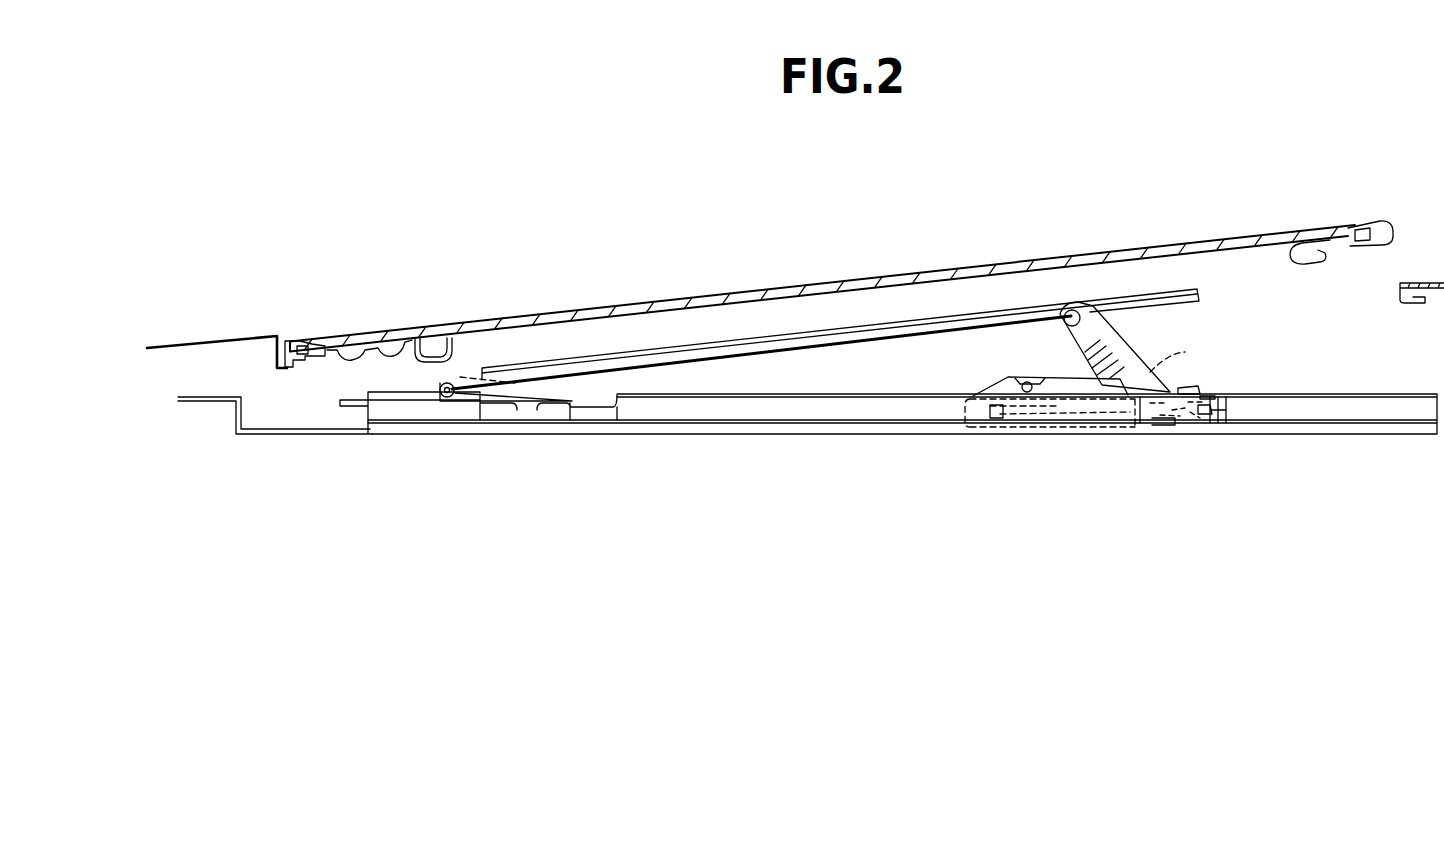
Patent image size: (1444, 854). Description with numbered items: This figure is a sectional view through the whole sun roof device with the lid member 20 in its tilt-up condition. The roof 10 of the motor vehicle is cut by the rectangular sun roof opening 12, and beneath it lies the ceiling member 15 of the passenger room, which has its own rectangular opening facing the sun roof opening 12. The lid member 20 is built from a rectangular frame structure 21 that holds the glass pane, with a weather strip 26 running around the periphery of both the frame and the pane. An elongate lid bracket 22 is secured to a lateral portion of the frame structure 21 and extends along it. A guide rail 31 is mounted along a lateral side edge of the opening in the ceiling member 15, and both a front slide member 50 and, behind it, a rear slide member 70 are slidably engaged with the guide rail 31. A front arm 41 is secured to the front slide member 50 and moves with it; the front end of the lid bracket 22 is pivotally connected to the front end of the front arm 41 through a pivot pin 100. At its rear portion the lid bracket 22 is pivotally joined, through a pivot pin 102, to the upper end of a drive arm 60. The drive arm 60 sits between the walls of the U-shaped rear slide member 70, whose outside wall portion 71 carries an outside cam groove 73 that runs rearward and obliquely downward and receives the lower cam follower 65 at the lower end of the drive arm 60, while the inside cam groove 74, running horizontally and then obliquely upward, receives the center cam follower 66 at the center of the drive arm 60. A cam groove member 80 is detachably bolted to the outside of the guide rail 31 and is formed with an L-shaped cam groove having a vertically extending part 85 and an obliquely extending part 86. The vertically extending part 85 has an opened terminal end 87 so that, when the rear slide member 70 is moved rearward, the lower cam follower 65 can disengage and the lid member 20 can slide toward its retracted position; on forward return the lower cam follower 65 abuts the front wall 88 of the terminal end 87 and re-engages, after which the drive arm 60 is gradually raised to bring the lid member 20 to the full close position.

The roof 10 is at (1433, 281).
The sun roof opening 12 is at (283, 338).
The ceiling member 15 is at (318, 436).
The lid member 20 is at (738, 290).
The rectangular frame structure 21 is at (332, 352).
The elongate lid bracket 22 is at (800, 345).
The weather strip 26 is at (1378, 220).
The guide rail 31 is at (836, 437).
The front arm 41 is at (514, 393).
The front slide member 50 is at (530, 420).
The drive arm 60 is at (1117, 358).
The lower cam follower 65 is at (1165, 425).
The center cam follower 66 is at (1194, 382).
The rear slide member 70 is at (989, 390).
The outside wall portion 71 is at (1001, 378).
The outside cam groove 73 is at (1030, 382).
The inside cam groove 74 is at (996, 425).
The cam groove member 80 is at (1192, 389).
The vertically extending part 85 is at (1222, 394).
The obliquely extending part 86 is at (1206, 425).
The terminal end 87 is at (1218, 388).
The front wall 88 is at (1196, 410).
The pivot pin 100 is at (452, 384).
The pivot pin 102 is at (1072, 310).